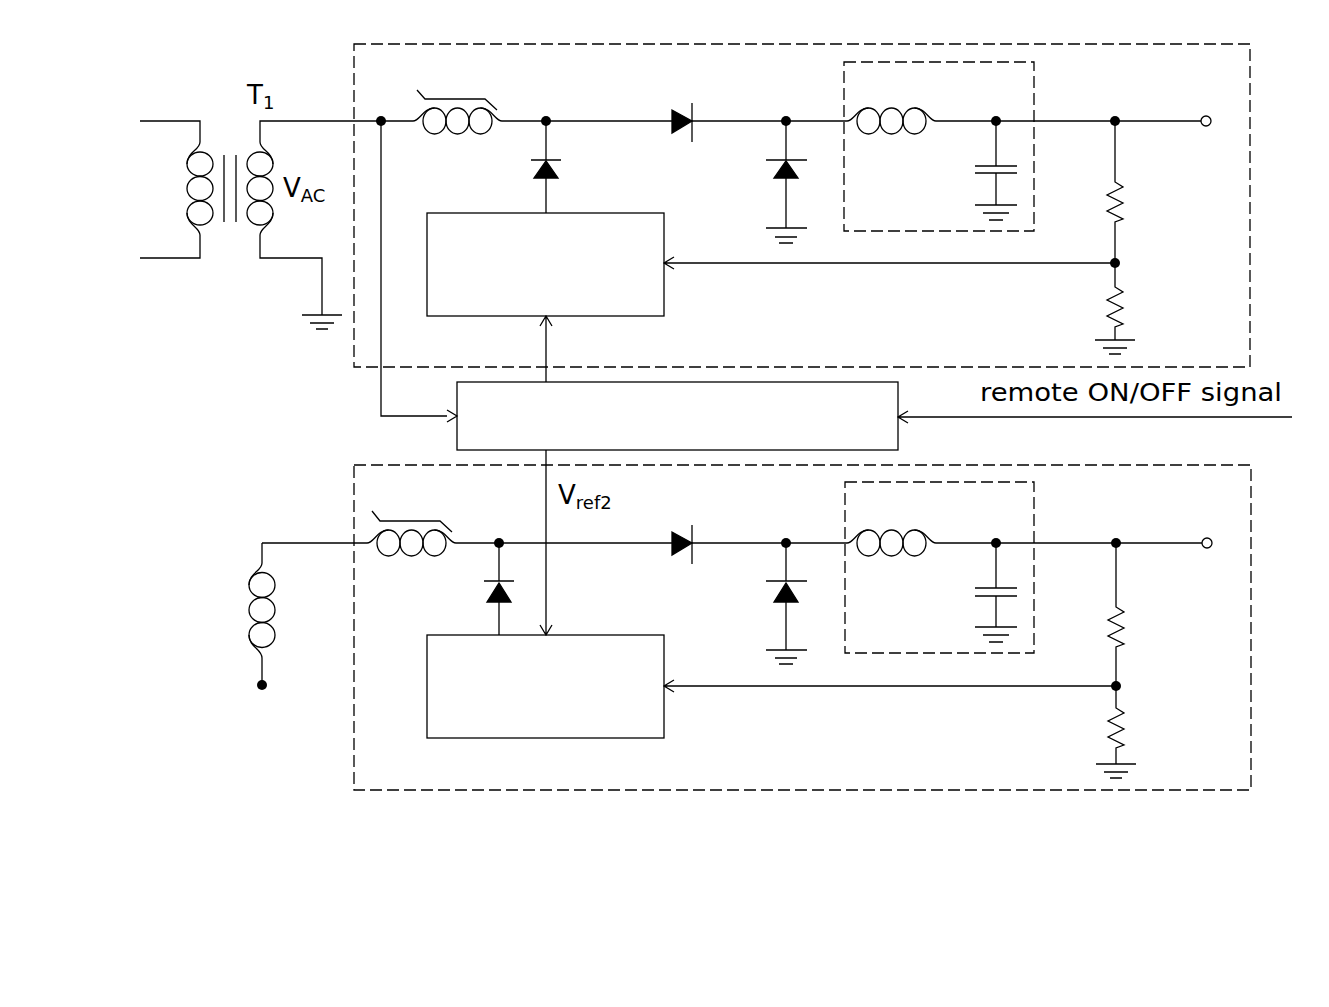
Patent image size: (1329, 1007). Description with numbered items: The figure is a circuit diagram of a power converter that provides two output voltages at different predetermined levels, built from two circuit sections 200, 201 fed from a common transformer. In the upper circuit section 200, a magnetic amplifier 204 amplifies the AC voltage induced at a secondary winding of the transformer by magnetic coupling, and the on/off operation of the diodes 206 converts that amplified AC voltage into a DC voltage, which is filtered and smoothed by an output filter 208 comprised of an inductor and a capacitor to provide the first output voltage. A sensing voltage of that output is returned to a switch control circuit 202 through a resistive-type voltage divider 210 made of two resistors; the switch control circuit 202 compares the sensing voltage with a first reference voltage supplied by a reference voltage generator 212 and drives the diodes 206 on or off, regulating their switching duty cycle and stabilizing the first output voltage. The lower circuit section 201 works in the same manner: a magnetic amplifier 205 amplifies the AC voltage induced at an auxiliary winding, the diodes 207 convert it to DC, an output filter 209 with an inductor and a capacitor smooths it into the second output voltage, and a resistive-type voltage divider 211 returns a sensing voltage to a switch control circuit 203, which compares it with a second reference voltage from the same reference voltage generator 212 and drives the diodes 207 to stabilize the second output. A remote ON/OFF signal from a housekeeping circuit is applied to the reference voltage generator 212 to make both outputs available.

The circuit section 200 is at (1238, 320).
The circuit section 201 is at (1127, 477).
The switch control circuit 202 is at (637, 220).
The switch control circuit 203 is at (637, 640).
The magnetic amplifier 204 is at (462, 97).
The magnetic amplifier 205 is at (418, 512).
The diodes 206 is at (683, 103).
The diodes 207 is at (683, 524).
The output filter 208 is at (1022, 105).
The output filter 209 is at (1022, 528).
The resistive-type voltage divider 210 is at (1148, 248).
The resistive-type voltage divider 211 is at (1142, 660).
The reference voltage generator 212 is at (888, 415).